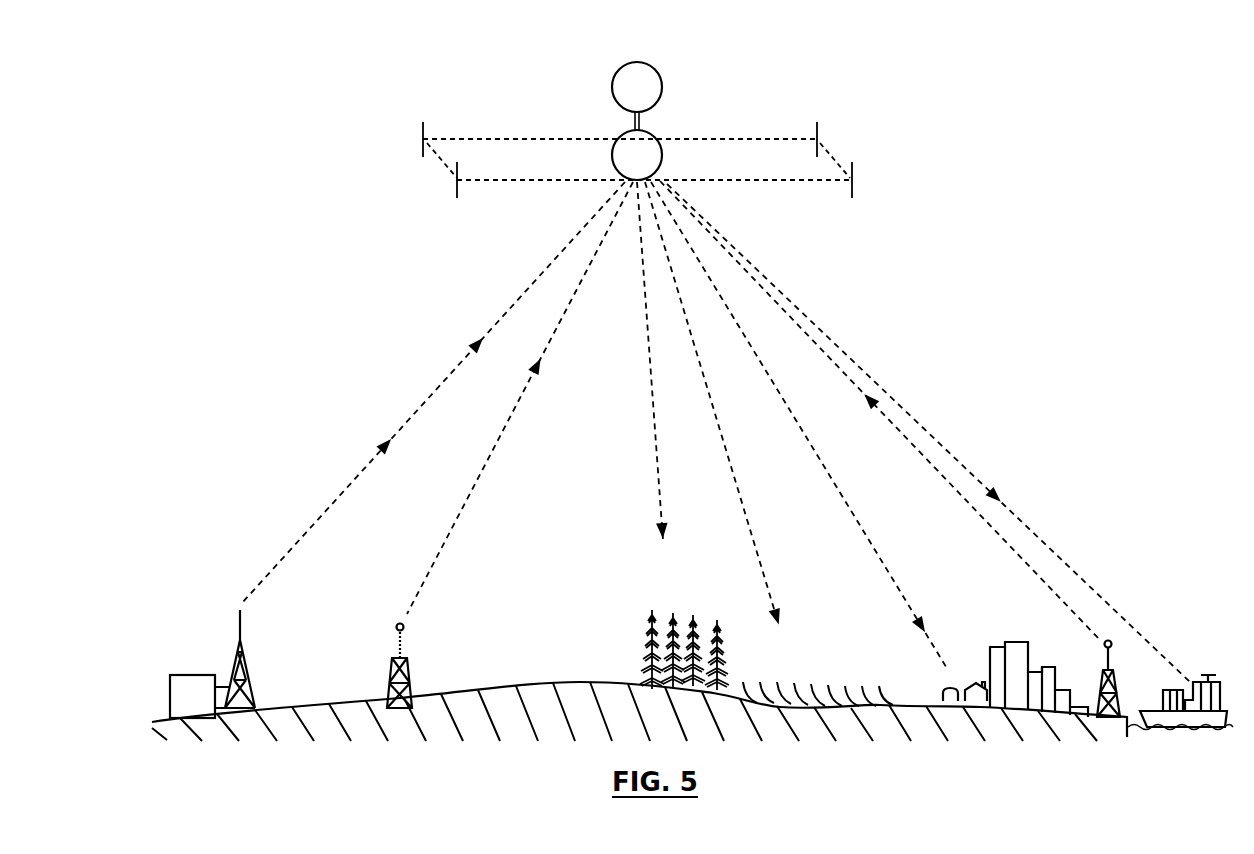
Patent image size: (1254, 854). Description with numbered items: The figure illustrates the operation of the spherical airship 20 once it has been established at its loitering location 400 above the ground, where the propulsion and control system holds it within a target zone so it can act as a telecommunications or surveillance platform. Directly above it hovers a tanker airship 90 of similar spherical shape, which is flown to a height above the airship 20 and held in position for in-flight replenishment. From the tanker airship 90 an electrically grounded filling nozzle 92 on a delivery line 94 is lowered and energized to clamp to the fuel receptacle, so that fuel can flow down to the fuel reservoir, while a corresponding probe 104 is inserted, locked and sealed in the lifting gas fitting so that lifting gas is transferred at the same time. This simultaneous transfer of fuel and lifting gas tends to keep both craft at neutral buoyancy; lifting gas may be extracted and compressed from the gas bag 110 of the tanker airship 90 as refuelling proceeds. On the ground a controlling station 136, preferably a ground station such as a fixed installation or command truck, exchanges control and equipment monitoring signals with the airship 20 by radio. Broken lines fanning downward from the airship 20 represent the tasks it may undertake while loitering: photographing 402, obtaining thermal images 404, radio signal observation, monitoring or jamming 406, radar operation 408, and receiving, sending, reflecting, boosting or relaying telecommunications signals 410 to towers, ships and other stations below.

The airship 20 is at (663, 155).
The tanker airship 90 is at (663, 83).
The filling nozzle 92 is at (641, 127).
The delivery line 94 is at (641, 120).
The probe 104 is at (645, 113).
The gas bag 110 is at (638, 81).
The controlling station 136 is at (183, 673).
The loitering location 400 is at (440, 160).
The photographing 402 is at (655, 427).
The obtaining thermal images 404 is at (726, 440).
The radio signal observation, monitoring, or jamming 406 is at (743, 330).
The radar operation 408 is at (943, 447).
The relaying telecommunications signals 410 is at (550, 337).